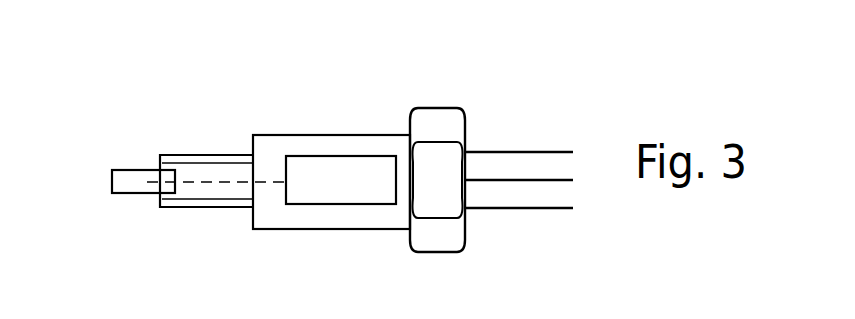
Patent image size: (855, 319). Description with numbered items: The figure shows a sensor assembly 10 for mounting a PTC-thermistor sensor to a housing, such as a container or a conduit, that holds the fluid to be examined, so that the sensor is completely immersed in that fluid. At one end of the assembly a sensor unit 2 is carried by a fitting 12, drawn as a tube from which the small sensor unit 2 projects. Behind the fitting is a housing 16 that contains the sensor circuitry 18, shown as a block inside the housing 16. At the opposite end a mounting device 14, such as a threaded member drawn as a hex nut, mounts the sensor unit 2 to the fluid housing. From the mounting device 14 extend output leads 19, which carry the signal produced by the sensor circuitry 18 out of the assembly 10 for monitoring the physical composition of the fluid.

The sensor assembly 10 is at (142, 97).
The sensor unit 2 is at (134, 164).
The fitting 12 is at (223, 154).
The housing 16 is at (290, 137).
The sensor circuitry 18 is at (374, 165).
The mounting device 14 is at (441, 125).
The output leads 19 is at (529, 150).